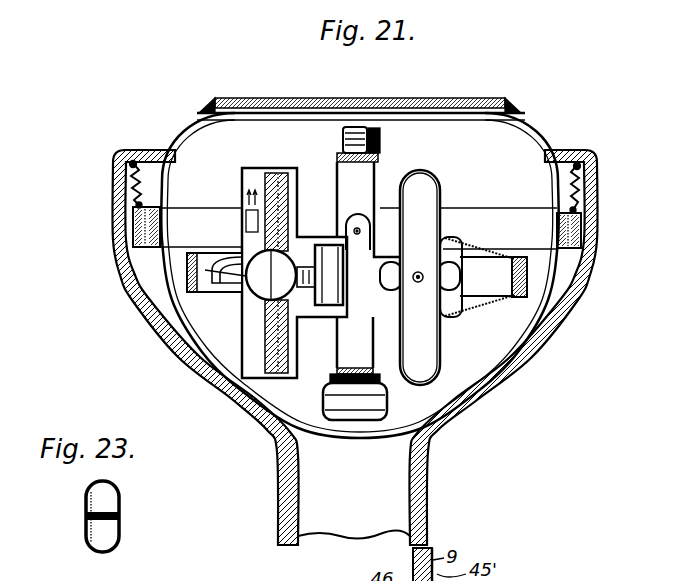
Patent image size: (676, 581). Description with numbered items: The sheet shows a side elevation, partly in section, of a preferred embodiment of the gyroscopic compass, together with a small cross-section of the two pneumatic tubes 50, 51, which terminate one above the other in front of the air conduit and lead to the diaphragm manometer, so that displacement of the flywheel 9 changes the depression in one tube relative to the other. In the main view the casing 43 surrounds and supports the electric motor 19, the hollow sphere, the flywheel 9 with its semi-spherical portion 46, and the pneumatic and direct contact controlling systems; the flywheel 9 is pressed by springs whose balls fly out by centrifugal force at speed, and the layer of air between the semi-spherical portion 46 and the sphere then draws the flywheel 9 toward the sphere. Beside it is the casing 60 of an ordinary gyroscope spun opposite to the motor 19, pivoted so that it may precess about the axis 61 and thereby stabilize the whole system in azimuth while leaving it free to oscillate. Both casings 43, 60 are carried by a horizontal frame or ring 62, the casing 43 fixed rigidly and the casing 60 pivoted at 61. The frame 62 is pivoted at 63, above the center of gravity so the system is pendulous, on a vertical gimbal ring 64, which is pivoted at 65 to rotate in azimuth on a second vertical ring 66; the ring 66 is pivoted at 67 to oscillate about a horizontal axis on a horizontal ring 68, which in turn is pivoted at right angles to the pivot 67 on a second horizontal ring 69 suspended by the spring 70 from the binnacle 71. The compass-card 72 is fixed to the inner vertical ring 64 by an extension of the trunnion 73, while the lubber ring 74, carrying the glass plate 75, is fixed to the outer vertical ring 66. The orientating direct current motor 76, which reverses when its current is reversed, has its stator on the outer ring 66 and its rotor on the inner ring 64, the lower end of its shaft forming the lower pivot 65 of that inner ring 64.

In FIG. 21, the flywheel 9 is at (292, 183).
In FIG. 21, the electric motor 19 is at (328, 246).
In FIG. 21, the casing 43 is at (242, 333).
In FIG. 21, the semi-spherical portion of the flywheel 46 is at (243, 292).
In FIG. 21, the gyroscope casing 60 is at (432, 190).
In FIG. 21, the precession axis 61 is at (418, 283).
In FIG. 21, the horizontal frame or ring 62 is at (172, 310).
In FIG. 21, the frame pivot 63 is at (356, 220).
In FIG. 21, the vertical gimbal ring 64 is at (374, 166).
In FIG. 21, the azimuth pivot 65 is at (344, 138).
In FIG. 21, the second vertical ring 66 is at (166, 285).
In FIG. 21, the horizontal-axis pivot 67 is at (160, 224).
In FIG. 21, the horizontal ring 68 is at (143, 248).
In FIG. 21, the second horizontal ring 69 is at (133, 234).
In FIG. 21, the spring 70 is at (128, 170).
In FIG. 21, the binnacle 71 is at (130, 150).
In FIG. 21, the compass-card 72 is at (265, 99).
In FIG. 21, the trunnion 73 is at (368, 99).
In FIG. 21, the lubber ring 74 is at (210, 101).
In FIG. 21, the glass plate 75 is at (457, 99).
In FIG. 21, the orientating direct current motor 76 is at (323, 398).
In FIG. 23, the pneumatic tube 50 is at (93, 533).
In FIG. 23, the pneumatic tube 51 is at (100, 494).